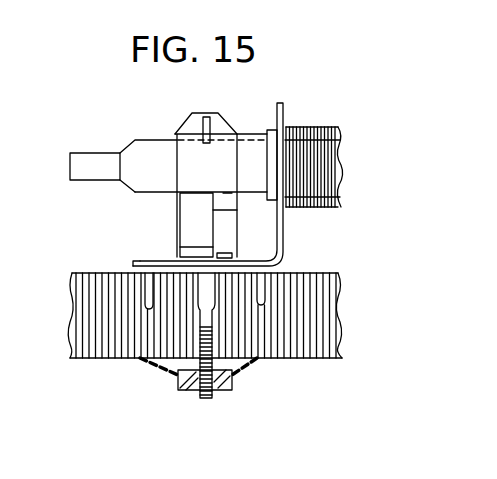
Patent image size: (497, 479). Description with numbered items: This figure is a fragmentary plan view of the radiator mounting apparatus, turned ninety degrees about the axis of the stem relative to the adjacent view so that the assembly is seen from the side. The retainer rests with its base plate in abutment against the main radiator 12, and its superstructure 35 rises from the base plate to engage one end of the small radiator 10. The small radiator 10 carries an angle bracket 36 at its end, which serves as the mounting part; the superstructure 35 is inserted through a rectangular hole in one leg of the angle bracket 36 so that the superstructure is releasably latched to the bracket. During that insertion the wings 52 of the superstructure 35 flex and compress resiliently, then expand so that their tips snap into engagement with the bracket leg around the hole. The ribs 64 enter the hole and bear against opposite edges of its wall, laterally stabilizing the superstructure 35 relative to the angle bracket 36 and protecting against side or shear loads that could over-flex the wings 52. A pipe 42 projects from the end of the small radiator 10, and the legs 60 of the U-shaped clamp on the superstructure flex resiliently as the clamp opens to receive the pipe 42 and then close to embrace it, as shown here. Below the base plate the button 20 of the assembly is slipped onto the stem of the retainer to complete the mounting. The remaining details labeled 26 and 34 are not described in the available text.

The small radiator 10 is at (350, 166).
The main radiator 12 is at (352, 327).
The button 20 is at (245, 380).
The screw 26 is at (207, 400).
The legs 34 is at (148, 288).
The superstructure 35 is at (166, 128).
The angle bracket 36 is at (296, 233).
The pipe 42 is at (104, 170).
The wings 52 is at (187, 225).
The legs 60 is at (218, 157).
The ribs 64 is at (225, 257).